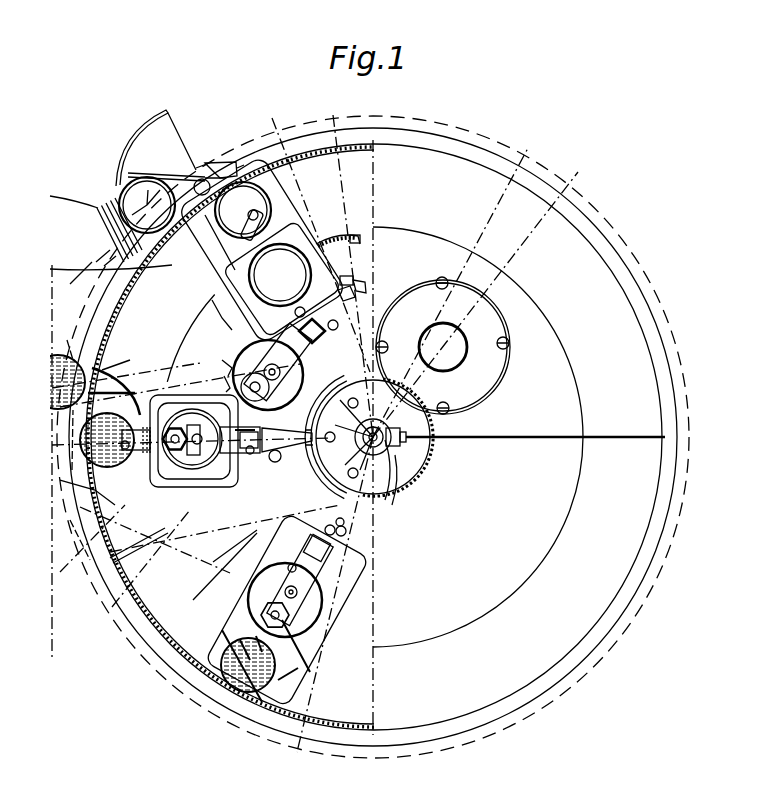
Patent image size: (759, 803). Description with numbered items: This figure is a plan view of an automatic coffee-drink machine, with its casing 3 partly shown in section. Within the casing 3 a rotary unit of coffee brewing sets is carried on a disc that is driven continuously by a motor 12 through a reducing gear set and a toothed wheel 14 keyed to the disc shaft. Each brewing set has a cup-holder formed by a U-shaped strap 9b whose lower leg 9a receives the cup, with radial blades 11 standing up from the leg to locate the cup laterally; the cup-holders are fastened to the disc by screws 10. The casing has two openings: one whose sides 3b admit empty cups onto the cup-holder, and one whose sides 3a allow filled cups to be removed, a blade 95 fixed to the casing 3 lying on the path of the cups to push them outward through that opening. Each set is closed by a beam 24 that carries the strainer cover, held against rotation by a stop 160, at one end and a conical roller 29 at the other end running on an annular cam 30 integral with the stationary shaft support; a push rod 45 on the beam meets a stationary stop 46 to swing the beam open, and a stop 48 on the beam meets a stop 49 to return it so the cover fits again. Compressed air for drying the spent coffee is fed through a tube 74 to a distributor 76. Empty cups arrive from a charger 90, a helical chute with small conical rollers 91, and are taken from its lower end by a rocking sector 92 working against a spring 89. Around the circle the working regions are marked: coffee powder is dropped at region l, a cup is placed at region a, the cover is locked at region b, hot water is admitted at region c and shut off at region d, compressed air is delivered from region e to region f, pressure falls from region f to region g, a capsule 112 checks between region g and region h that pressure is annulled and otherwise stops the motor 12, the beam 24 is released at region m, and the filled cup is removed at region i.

The casing 3 is at (525, 672).
The sides of opening 3a is at (102, 370).
The sides of opening 3b is at (212, 437).
The lower leg 9a is at (285, 210).
The U-shaped strap 9b is at (312, 240).
The screws 10 is at (355, 278).
The radial blades 11 is at (268, 195).
The motor 12 is at (480, 395).
The toothed wheel 14 is at (413, 480).
The beam 24 is at (300, 365).
The conical roller 29 is at (358, 292).
The annular cam 30 is at (325, 472).
The push rod 45 is at (300, 388).
The stationary stop 46 is at (238, 420).
The stop 48 is at (334, 330).
The stop 49 is at (328, 330).
The tube 74 is at (463, 448).
The distributor 76 is at (390, 503).
The spring 89 is at (215, 162).
The charger 90 is at (62, 214).
The conical rollers 91 is at (86, 273).
The rocking sector 92 is at (160, 118).
The blade 95 is at (150, 390).
The capsule 112 is at (305, 650).
The stop 160 is at (277, 463).
The region a is at (148, 200).
The region b is at (275, 122).
The region c is at (336, 118).
The region d is at (530, 152).
The region e is at (578, 176).
The region f is at (297, 748).
The region g is at (108, 608).
The region h is at (68, 548).
The region i is at (62, 445).
The region l is at (58, 360).
The region m is at (87, 457).